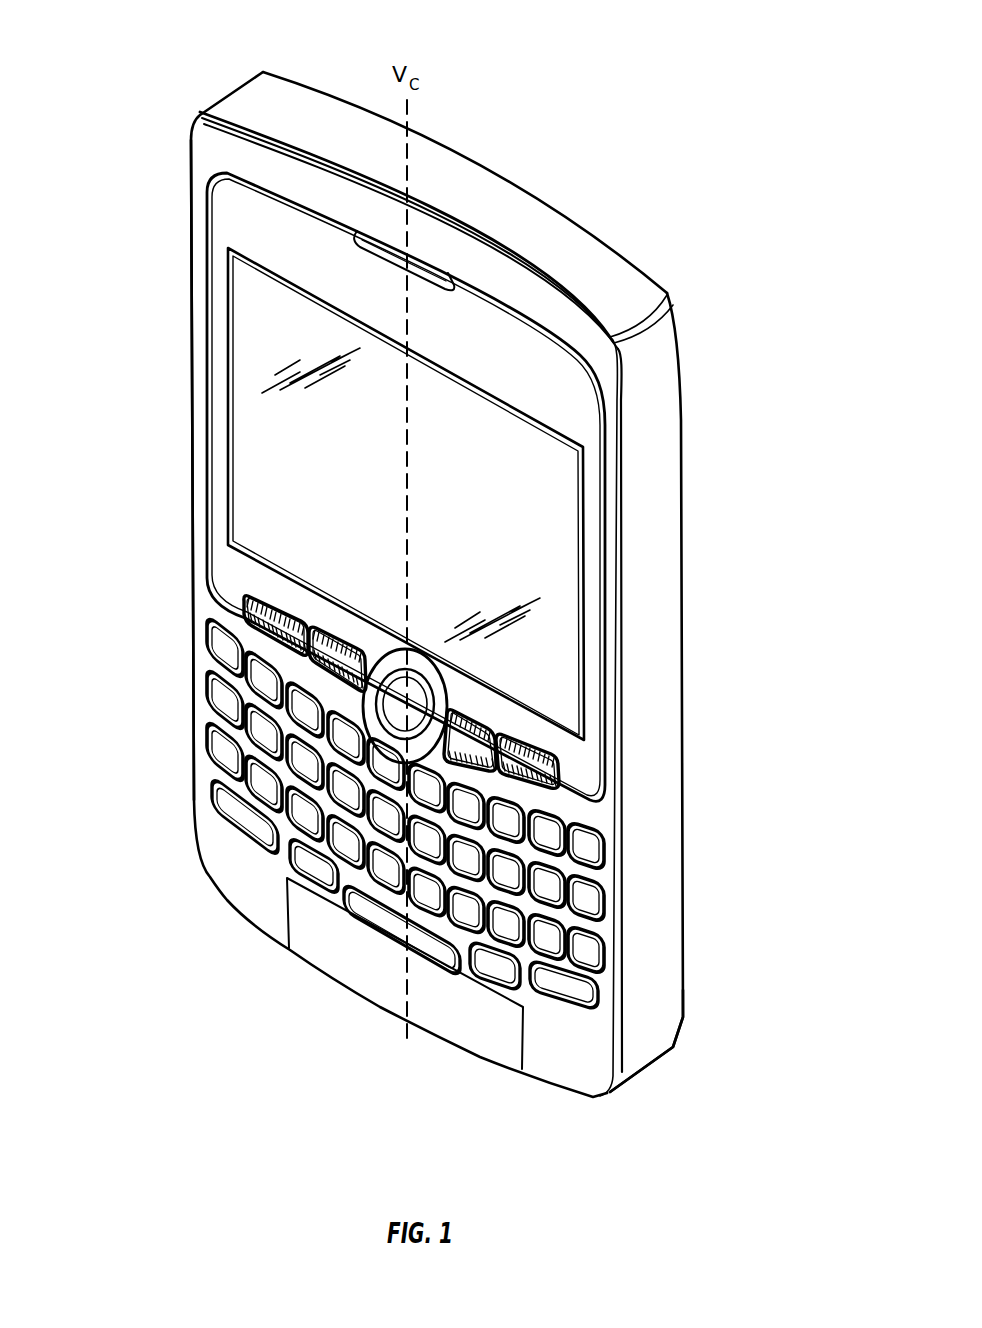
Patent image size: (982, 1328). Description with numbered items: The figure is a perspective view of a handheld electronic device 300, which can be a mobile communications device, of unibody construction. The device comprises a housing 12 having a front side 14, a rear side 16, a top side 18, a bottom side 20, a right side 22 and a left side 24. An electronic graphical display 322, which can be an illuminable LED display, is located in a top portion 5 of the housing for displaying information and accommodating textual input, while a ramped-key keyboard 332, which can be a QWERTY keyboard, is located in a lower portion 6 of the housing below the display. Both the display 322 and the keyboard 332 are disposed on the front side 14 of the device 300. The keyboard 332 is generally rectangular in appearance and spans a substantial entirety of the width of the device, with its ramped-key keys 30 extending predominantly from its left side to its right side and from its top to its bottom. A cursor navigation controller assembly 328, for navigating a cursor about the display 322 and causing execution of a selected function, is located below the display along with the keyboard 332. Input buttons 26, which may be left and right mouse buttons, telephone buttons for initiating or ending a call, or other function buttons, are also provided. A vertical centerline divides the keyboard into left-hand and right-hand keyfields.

The handheld electronic device 300 is at (222, 55).
The top side 18 is at (352, 60).
The rear side 16 is at (687, 285).
The housing 12 is at (667, 350).
The right side 22 is at (690, 542).
The ramped-key keyboard 332 is at (655, 893).
The front side 14 is at (177, 320).
The left side 24 is at (150, 568).
The top portion 5 is at (150, 432).
The electronic graphical display 322 is at (587, 483).
The cursor navigation controller assembly 328 is at (435, 695).
The lower portion 6 is at (150, 732).
The input buttons 26 is at (207, 752).
The ramped-key keys 30 is at (337, 843).
The bottom side 20 is at (380, 1078).